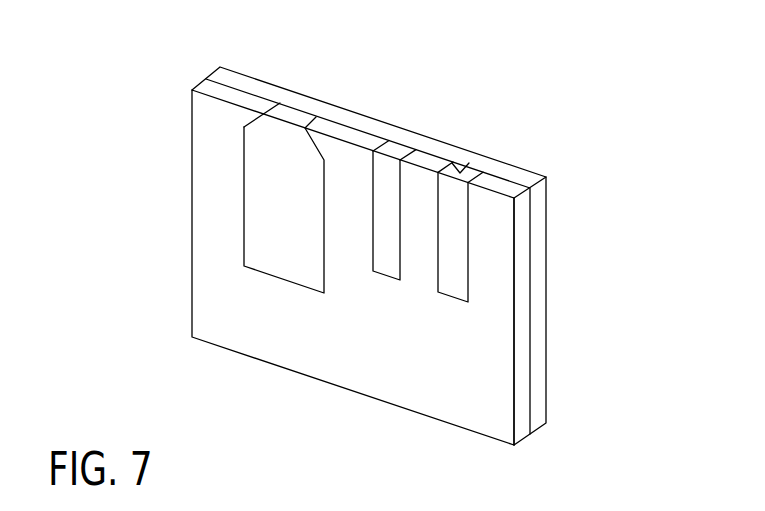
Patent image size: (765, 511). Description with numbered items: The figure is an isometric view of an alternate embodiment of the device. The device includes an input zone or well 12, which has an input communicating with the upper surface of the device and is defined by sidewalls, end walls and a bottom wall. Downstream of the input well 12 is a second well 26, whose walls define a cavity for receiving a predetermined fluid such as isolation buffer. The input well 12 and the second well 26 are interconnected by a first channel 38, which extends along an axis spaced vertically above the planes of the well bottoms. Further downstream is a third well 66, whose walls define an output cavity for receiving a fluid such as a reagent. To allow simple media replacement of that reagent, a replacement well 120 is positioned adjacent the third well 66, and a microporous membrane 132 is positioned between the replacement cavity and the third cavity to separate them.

The input well 12 is at (192, 212).
The replacement well 120 is at (500, 162).
The first channel 38 is at (348, 180).
The second well 26 is at (384, 279).
The microporous membrane 132 is at (453, 160).
The third well 66 is at (472, 187).